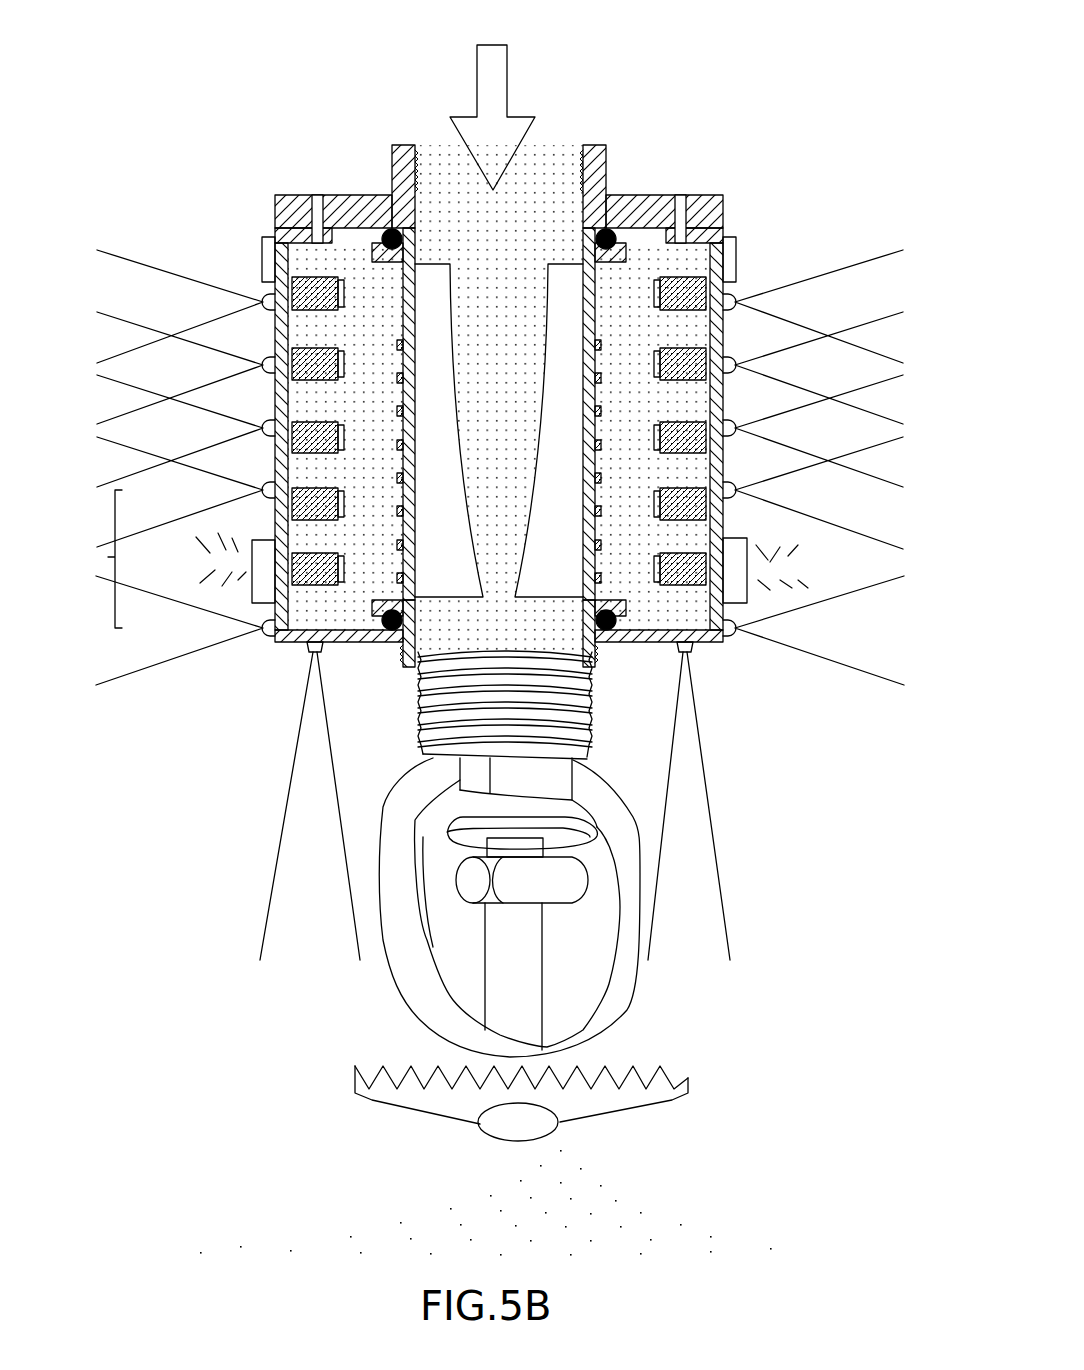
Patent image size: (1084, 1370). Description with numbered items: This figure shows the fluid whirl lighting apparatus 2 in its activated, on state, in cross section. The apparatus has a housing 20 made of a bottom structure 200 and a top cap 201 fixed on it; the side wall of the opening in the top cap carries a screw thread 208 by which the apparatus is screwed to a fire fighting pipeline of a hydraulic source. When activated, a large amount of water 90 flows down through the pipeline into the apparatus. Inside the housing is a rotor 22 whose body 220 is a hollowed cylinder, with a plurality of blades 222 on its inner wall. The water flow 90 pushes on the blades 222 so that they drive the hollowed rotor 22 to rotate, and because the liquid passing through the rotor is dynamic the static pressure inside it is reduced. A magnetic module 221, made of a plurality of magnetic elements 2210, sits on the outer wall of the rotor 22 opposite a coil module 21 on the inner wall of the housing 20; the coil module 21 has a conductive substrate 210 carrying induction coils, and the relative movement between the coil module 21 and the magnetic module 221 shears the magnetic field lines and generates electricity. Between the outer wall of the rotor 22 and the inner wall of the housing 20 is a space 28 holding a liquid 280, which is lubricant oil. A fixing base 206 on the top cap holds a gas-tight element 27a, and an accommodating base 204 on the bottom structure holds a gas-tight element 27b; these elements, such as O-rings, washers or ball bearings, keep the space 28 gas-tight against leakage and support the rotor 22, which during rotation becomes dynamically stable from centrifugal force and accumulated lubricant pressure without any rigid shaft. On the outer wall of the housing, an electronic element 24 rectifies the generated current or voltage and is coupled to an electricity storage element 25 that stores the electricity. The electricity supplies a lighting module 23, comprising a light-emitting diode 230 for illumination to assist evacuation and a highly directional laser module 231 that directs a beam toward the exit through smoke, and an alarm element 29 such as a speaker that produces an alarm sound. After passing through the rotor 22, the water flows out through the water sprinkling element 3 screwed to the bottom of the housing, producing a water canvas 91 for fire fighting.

The fluid whirl lighting apparatus 2 is at (152, 94).
The housing 20 is at (450, 370).
The bottom structure 200 is at (275, 326).
The top cap 201 is at (352, 195).
The screw thread 208 is at (606, 158).
The water 90 is at (500, 80).
The rotor 22 is at (456, 410).
The magnetic module 221 is at (363, 414).
The magnetic elements 2210 is at (397, 384).
The body 220 is at (415, 610).
The blades 222 is at (447, 280).
The fixing base 206 is at (378, 250).
The gas-tight element 27a is at (628, 200).
The gas-tight element 27b is at (628, 642).
The accommodating base 204 is at (385, 628).
The electronic element 24 is at (262, 250).
The electricity storage element 25 is at (736, 258).
The lighting module 23 is at (172, 559).
The alarm element 29 is at (744, 545).
The conductive substrate 210 is at (292, 532).
The coil module 21 is at (644, 338).
The liquid 280 is at (692, 470).
The space 28 is at (641, 526).
The light-emitting diode 230 is at (240, 492).
The laser module 231 is at (240, 630).
The water sprinkling element 3 is at (378, 802).
The water canvas 91 is at (655, 1220).